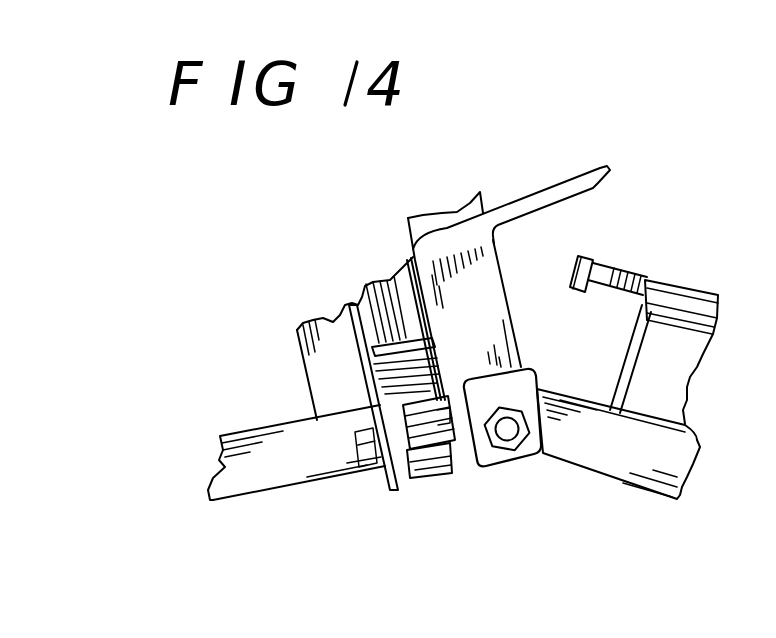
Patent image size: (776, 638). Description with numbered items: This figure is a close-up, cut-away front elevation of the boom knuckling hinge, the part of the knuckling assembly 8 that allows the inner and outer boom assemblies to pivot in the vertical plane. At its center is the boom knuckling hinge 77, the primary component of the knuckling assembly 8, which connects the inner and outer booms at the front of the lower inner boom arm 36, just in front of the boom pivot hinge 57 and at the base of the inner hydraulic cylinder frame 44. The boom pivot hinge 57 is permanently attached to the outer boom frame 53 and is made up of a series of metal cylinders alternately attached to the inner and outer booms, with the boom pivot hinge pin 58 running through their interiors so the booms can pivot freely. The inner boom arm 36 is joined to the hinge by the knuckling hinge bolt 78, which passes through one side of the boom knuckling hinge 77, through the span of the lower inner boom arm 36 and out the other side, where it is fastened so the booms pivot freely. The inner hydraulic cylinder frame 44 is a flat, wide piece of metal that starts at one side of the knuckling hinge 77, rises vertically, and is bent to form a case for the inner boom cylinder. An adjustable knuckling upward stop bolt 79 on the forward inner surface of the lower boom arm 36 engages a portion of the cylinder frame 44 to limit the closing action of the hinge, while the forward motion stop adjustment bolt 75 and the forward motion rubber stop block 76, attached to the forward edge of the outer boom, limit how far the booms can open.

The knuckling assembly 8 is at (530, 140).
The inner hydraulic cylinder frame 44 is at (606, 155).
The outer boom frame 53 is at (303, 448).
The boom pivot hinge 57 is at (355, 270).
The forward motion stop adjustment bolt 75 is at (347, 470).
The forward motion rubber stop block 76 is at (431, 409).
The boom pivot hinge pin 58 is at (433, 491).
The boom knuckling hinge 77 is at (509, 484).
The knuckling hinge bolt 78 is at (539, 460).
The knuckling upward stop bolt 79 is at (609, 253).
The lower inner boom arm 36 is at (617, 437).